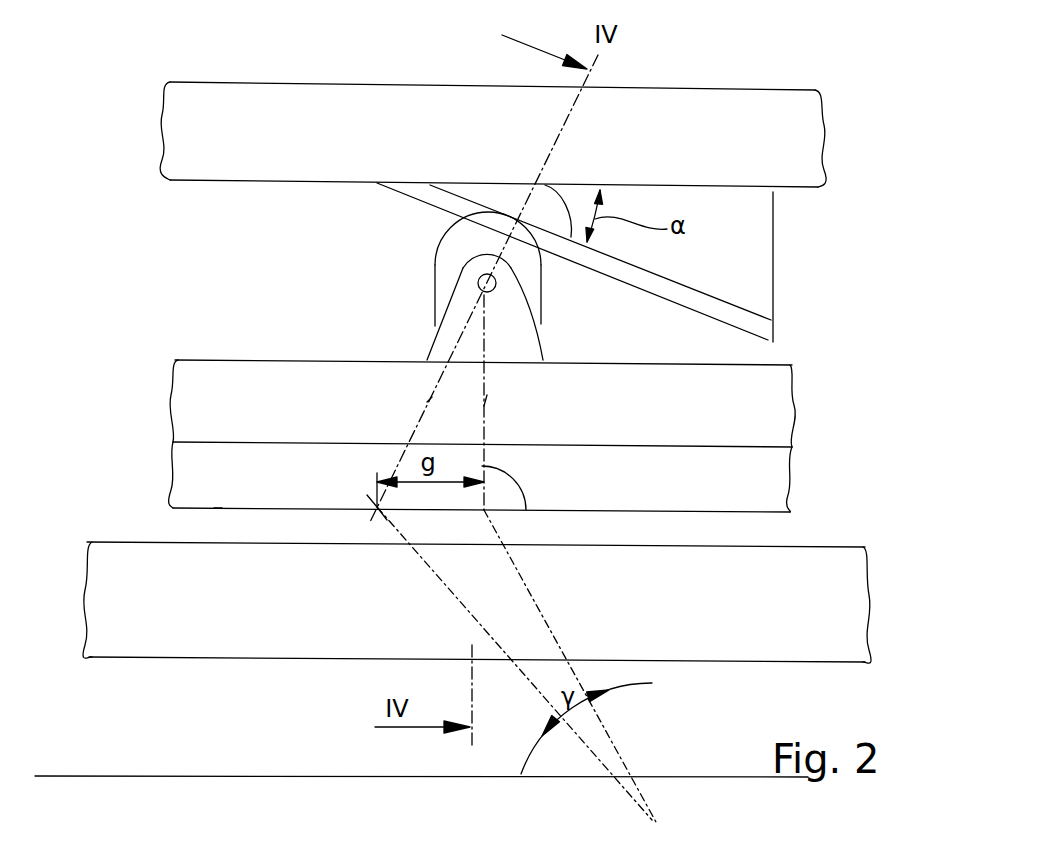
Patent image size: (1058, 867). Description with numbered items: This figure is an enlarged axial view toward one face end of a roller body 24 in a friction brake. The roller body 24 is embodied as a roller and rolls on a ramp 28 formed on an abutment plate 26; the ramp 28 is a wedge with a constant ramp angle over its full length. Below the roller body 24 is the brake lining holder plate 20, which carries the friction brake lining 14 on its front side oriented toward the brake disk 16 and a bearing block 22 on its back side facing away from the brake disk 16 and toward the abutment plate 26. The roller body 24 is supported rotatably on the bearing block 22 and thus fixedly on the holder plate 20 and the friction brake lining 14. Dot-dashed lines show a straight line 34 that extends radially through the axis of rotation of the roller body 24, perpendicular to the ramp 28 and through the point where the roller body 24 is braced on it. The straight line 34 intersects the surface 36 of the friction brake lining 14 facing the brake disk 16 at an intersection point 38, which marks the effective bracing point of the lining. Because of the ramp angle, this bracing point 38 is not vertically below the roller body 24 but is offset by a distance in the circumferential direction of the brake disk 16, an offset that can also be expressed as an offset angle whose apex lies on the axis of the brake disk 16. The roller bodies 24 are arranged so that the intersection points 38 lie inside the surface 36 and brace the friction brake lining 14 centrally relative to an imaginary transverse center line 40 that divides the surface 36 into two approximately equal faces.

The friction brake lining 14 is at (755, 483).
The brake disk 16 is at (822, 610).
The brake lining holder plate 20 is at (758, 398).
The bearing block 22 is at (460, 314).
The roller body 24 is at (470, 238).
The abutment plate 26 is at (712, 123).
The ramp 28 is at (738, 252).
The straight line 34 is at (427, 402).
The surface 36 is at (218, 508).
The intersection point 38 is at (370, 510).
The transverse center line 40 is at (487, 395).